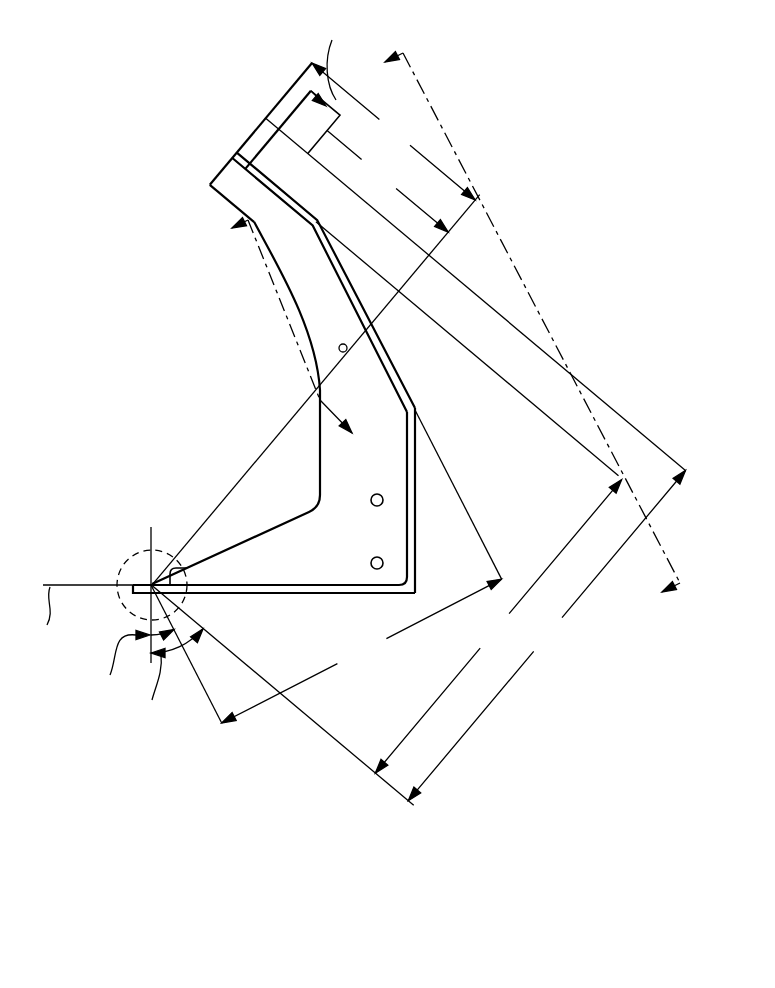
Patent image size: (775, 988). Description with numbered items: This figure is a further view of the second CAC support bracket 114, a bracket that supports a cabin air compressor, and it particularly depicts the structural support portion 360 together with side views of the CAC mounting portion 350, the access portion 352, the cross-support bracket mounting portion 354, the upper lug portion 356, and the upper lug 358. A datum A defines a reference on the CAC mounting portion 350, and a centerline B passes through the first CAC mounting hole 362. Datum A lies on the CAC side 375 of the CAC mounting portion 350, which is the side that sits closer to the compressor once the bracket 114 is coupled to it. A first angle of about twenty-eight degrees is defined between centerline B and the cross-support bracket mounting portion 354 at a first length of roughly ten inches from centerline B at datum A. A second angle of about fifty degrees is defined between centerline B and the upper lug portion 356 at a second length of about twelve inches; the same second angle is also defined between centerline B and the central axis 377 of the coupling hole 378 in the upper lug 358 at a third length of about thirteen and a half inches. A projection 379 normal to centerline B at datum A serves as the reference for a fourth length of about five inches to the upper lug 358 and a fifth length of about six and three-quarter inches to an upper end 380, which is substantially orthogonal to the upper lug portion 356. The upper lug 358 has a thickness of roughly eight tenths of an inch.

The second CAC support bracket 114 is at (658, 183).
The CAC mounting portion 350 is at (280, 597).
The access portion 352 is at (410, 483).
The cross-support bracket mounting portion 354 is at (342, 285).
The upper lug portion 356 is at (241, 150).
The upper lug 358 is at (253, 158).
The structural support portion 360 is at (252, 540).
The first CAC mounting hole 362 is at (148, 584).
The CAC side 375 is at (238, 565).
The central axis 377 is at (635, 428).
The coupling hole 378 is at (268, 155).
The projection 379 is at (297, 411).
The upper end 380 is at (221, 170).